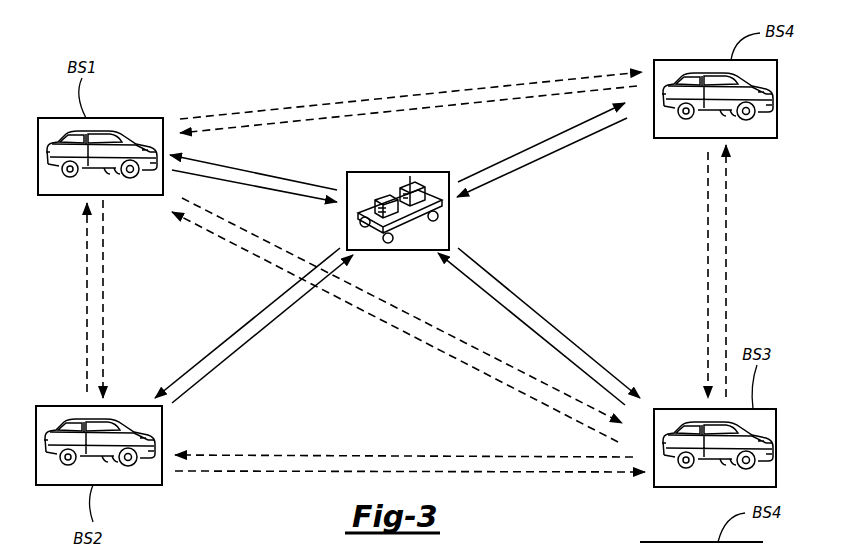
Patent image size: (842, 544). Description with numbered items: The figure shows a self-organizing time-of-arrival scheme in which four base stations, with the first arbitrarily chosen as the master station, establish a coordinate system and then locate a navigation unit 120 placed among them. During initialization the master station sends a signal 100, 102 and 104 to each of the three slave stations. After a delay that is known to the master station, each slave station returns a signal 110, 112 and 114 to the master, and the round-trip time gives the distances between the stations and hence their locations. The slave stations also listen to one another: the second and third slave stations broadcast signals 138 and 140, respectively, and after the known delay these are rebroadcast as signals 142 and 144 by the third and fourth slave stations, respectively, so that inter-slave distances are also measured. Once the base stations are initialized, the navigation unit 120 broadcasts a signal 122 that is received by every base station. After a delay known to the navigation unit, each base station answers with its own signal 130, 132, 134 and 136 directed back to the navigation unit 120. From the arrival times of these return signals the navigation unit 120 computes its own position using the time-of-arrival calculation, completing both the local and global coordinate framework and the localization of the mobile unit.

The signal 100 is at (108, 298).
The signal 102 is at (403, 313).
The signal 104 is at (470, 87).
The signal 110 is at (85, 298).
The signal 112 is at (405, 337).
The signal 114 is at (432, 108).
The navigation unit 120 is at (449, 217).
The signal 122 is at (260, 170).
The signal 130 is at (260, 193).
The signal 132 is at (263, 330).
The signal 134 is at (515, 318).
The signal 136 is at (538, 160).
The signal 138 is at (255, 472).
The signal 140 is at (728, 250).
The signal 142 is at (372, 452).
The signal 144 is at (705, 264).